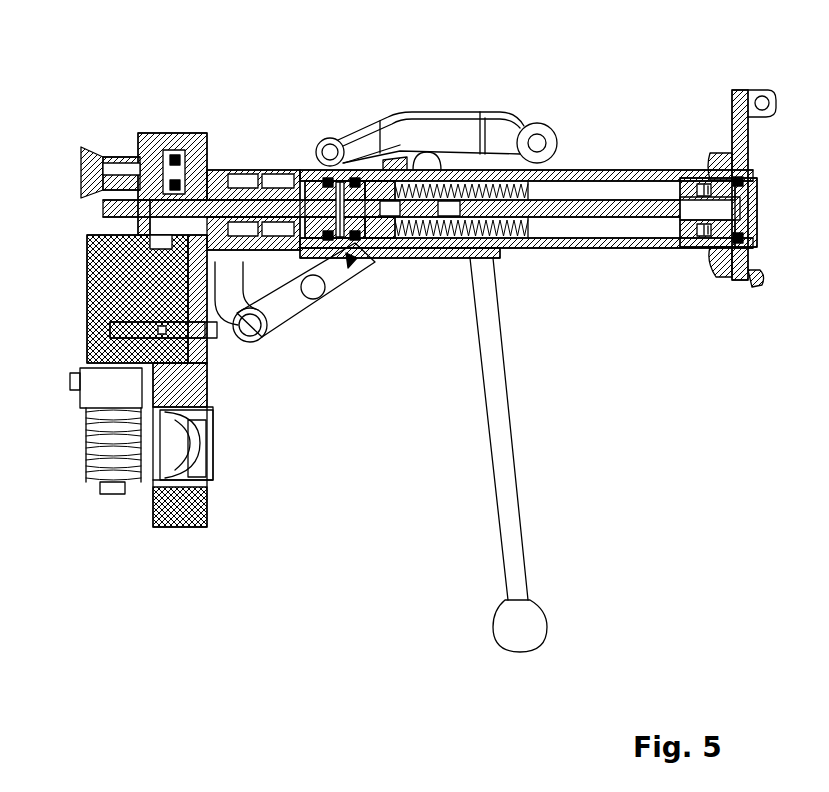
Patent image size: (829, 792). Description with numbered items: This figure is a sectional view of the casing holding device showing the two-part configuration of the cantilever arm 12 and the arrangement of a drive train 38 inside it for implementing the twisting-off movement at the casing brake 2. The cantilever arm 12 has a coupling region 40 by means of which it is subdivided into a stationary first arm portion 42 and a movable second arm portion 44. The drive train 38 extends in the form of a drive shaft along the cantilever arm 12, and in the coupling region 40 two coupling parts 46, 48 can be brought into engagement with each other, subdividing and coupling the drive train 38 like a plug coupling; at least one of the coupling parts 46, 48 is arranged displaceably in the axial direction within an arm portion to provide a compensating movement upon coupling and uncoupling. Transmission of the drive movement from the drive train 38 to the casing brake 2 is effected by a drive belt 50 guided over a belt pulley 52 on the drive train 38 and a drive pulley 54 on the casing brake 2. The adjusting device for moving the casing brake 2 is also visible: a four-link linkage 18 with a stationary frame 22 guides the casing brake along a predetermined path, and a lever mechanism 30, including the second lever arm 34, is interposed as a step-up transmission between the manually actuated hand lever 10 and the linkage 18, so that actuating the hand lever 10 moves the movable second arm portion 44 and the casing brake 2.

The casing brake 2 is at (173, 478).
The hand lever 10 is at (507, 503).
The cantilever arm 12 is at (575, 247).
The four-link linkage 18 is at (293, 317).
The stationary frame 22 is at (277, 317).
The lever mechanism 30 is at (507, 100).
The second lever arm 34 is at (396, 140).
The drive train 38 is at (572, 210).
The coupling region 40 is at (345, 237).
The first arm portion 42 is at (628, 175).
The second arm portion 44 is at (257, 170).
The coupling part 46 is at (378, 228).
The coupling part 48 is at (327, 240).
The drive belt 50 is at (180, 157).
The belt pulley 52 is at (177, 250).
The drive pulley 54 is at (203, 497).